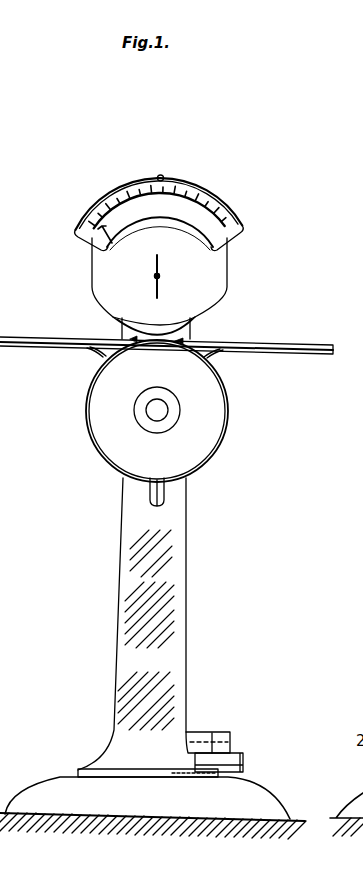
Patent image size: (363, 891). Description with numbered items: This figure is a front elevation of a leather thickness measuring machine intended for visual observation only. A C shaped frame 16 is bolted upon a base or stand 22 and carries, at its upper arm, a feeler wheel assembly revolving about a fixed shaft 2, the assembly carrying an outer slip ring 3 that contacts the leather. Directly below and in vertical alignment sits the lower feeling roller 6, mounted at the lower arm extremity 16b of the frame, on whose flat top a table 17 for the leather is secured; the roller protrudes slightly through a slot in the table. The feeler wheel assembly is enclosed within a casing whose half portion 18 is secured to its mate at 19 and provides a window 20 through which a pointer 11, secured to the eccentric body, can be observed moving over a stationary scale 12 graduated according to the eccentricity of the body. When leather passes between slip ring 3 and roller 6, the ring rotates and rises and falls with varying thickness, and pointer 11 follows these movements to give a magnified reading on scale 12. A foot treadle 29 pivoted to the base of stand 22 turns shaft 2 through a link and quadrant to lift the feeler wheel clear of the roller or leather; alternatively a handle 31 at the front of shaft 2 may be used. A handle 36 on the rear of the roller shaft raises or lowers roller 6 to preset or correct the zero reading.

The shaft 2 is at (161, 277).
The outer slip ring 3 is at (110, 326).
The lower feeling roller 6 is at (212, 426).
The pointer 11 is at (95, 236).
The scale 12 is at (128, 192).
The C shaped frame 16 is at (190, 340).
The lower arm extremity 16b is at (124, 351).
The table 17 is at (333, 345).
The casing portion 18 is at (98, 283).
The casing fastening 19 is at (163, 176).
The window 20 is at (213, 236).
The base or stand 22 is at (170, 651).
The foot treadle 29 is at (245, 763).
The handle 31 is at (151, 266).
The handle 36 is at (150, 495).